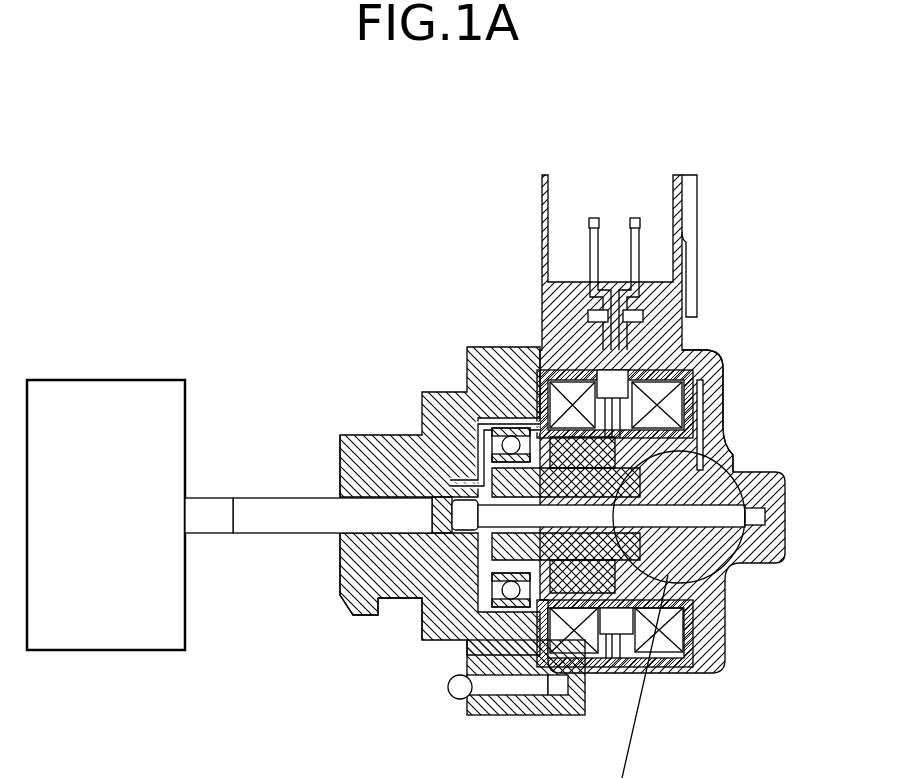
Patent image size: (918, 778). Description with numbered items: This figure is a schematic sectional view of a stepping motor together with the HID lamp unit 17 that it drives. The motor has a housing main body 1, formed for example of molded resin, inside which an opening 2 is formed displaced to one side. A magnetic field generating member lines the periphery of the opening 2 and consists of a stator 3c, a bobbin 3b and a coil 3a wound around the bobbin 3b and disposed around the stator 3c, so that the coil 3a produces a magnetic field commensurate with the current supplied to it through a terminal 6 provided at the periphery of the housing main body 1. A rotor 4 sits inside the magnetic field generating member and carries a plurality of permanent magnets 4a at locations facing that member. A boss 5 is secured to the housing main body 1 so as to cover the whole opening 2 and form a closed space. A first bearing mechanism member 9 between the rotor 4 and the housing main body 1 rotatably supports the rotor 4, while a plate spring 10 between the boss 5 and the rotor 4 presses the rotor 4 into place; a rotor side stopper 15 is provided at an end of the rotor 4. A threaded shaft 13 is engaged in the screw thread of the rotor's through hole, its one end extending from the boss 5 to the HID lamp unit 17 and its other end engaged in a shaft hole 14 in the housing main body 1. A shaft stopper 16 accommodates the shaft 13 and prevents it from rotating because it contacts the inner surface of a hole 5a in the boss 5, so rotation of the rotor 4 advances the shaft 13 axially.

The housing main body 1 is at (790, 493).
The opening 2 is at (735, 460).
The coil 3a is at (718, 388).
The bobbin 3b is at (727, 625).
The stator 3c is at (722, 416).
The rotor 4 is at (445, 440).
The permanent magnets 4a is at (640, 375).
The boss 5 is at (408, 432).
The hole 5a is at (340, 548).
The terminal 6 is at (637, 218).
The first bearing mechanism member 9 is at (465, 655).
The plate spring 10 is at (425, 612).
The shaft 13 is at (290, 512).
The shaft hole 14 is at (790, 520).
The rotor side stopper 15 is at (445, 527).
The shaft stopper 16 is at (340, 468).
The HID lamp unit 17 is at (145, 385).